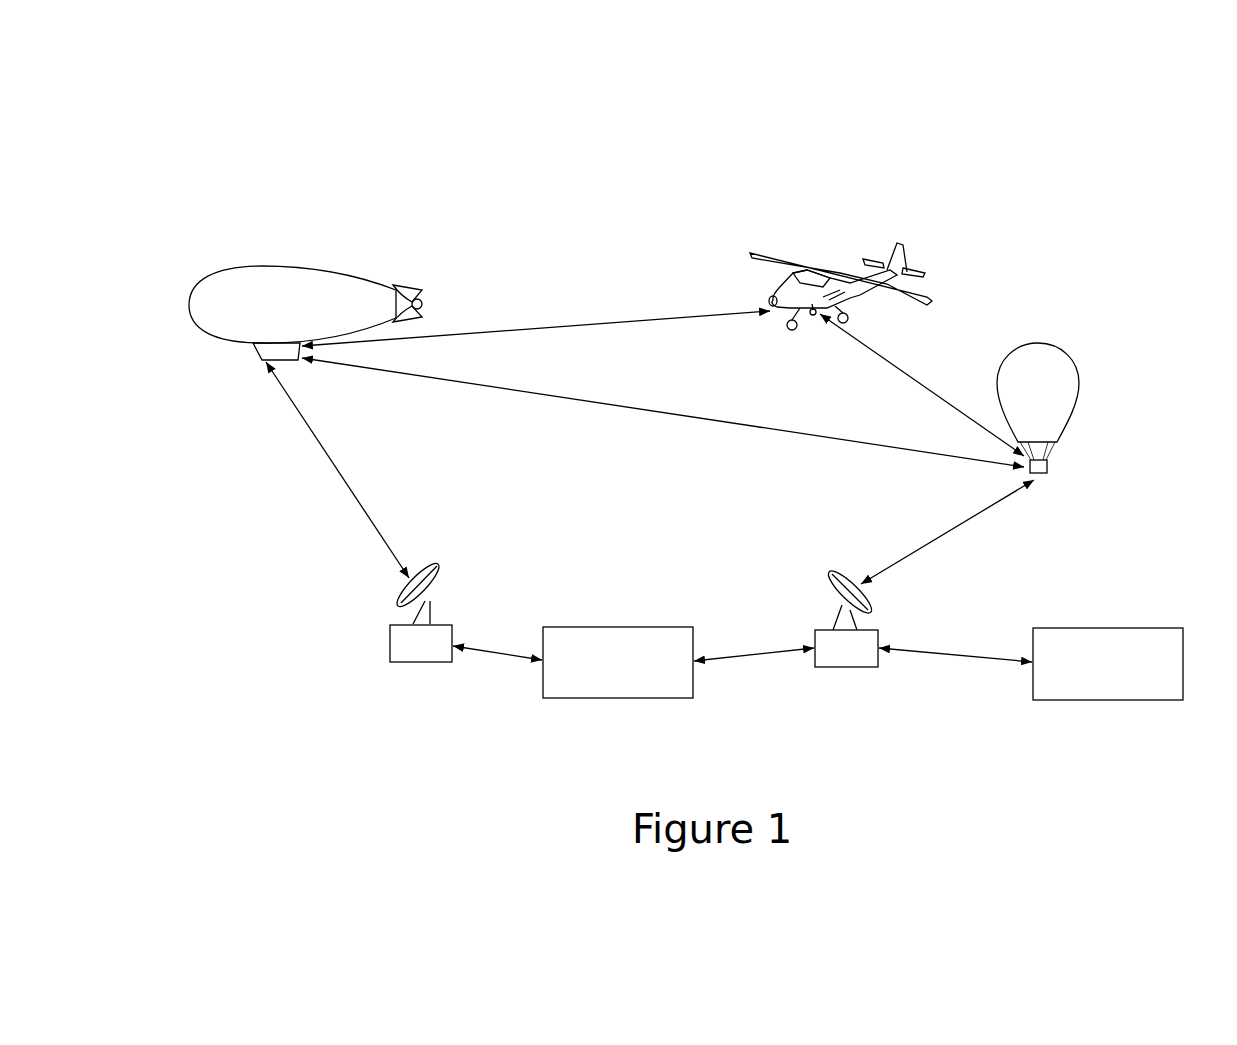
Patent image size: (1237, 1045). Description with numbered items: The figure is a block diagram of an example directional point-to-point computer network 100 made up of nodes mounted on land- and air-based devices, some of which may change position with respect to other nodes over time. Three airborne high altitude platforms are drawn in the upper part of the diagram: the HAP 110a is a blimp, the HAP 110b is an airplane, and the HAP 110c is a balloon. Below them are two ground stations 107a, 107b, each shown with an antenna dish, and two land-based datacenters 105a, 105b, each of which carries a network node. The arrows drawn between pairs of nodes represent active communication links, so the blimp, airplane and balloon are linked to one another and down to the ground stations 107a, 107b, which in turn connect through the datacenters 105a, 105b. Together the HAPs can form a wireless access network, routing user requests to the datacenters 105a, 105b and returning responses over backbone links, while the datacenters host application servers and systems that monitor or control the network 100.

The directional point-to-point computer network 100 is at (700, 40).
The high altitude platform (blimp) 110a is at (290, 278).
The high altitude platform (airplane) 110b is at (812, 268).
The high altitude platform (balloon) 110c is at (1045, 362).
The ground station 107a is at (421, 610).
The ground station 107b is at (846, 616).
The datacenter 105a is at (618, 662).
The datacenter 105b is at (1108, 664).